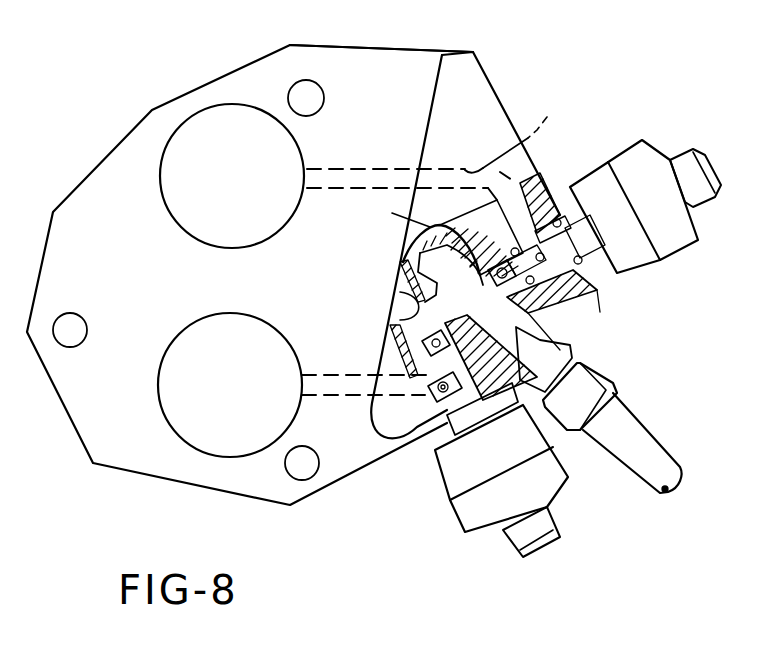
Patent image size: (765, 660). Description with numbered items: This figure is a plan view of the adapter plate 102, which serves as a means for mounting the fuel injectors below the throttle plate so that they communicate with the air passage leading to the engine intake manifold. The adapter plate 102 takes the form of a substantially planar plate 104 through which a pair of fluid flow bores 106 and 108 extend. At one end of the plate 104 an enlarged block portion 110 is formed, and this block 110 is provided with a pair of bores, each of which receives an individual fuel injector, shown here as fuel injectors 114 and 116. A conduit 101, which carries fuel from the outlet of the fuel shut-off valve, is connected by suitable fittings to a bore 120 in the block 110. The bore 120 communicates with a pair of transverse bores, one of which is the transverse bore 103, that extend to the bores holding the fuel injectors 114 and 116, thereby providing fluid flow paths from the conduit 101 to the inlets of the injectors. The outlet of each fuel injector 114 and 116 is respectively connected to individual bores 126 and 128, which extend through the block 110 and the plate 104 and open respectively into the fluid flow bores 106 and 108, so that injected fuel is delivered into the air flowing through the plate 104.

The conduit 101 is at (627, 427).
The adapter plate 102 is at (133, 88).
The transverse bore 103 is at (450, 275).
The planar plate 104 is at (242, 72).
The fluid flow bore 106 is at (171, 146).
The fluid flow bore 108 is at (234, 453).
The block portion 110 is at (470, 64).
The fuel injector 114 is at (672, 96).
The fuel injector 116 is at (478, 512).
The bore 120 is at (497, 306).
The bore 126 is at (544, 188).
The bore 128 is at (349, 381).